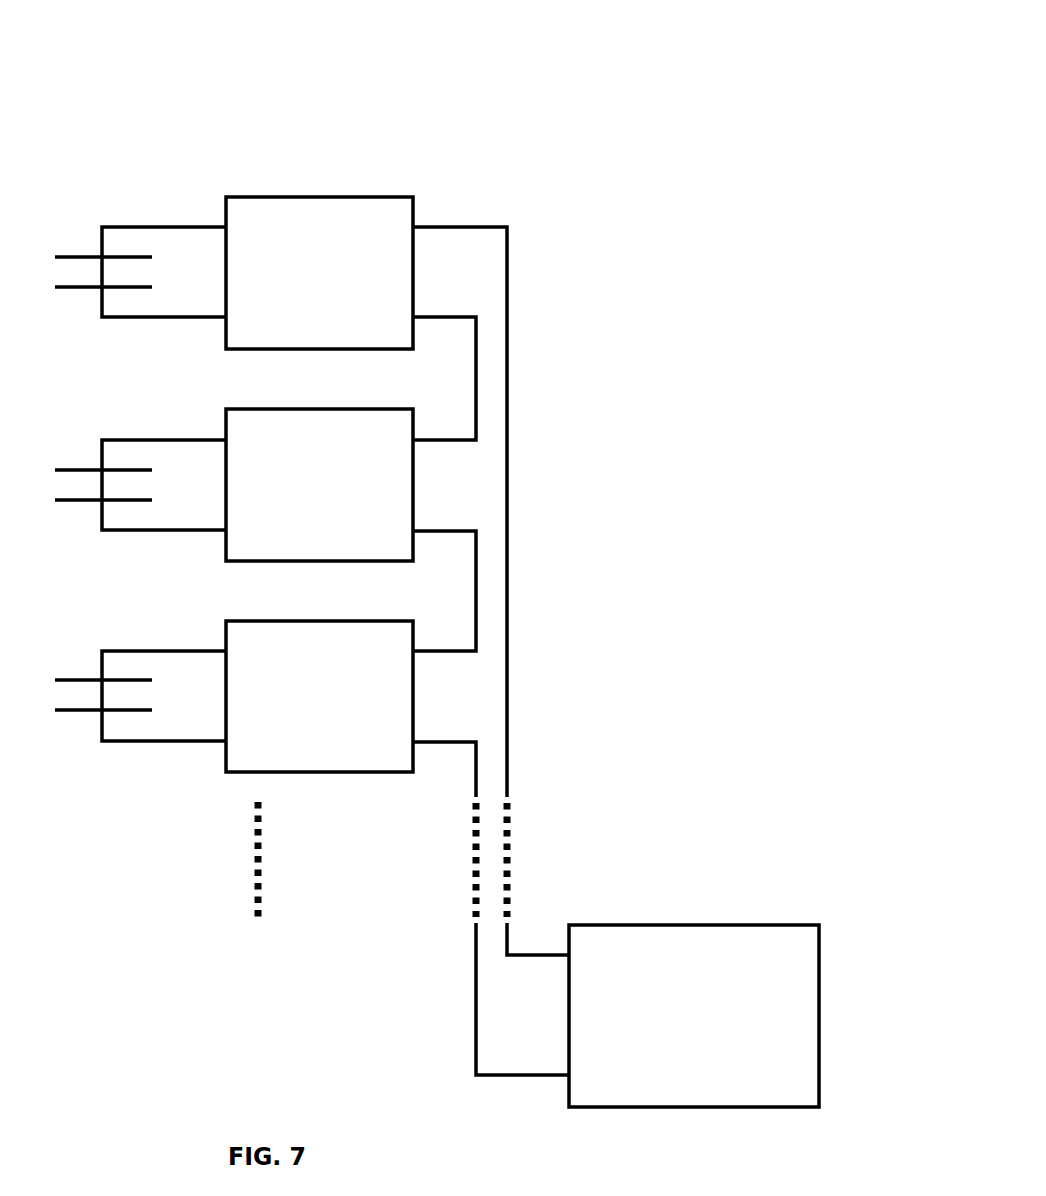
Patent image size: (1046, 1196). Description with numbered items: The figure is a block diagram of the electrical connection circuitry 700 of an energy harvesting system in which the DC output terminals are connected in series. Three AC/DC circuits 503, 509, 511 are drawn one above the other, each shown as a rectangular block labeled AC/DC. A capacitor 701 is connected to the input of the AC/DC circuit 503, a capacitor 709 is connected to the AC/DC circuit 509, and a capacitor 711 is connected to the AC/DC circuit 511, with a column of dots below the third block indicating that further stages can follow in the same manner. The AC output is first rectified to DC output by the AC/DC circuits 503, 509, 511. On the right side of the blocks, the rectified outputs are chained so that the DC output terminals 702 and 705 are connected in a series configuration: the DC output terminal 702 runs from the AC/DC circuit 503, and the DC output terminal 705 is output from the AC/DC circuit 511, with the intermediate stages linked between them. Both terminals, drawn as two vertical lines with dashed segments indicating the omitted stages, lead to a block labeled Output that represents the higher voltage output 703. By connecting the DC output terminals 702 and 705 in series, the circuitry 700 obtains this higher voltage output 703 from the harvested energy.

The electrical connection circuitry 700 is at (670, 87).
The capacitor 701 is at (75, 257).
The capacitor 709 is at (75, 470).
The capacitor 711 is at (75, 680).
The AC/DC circuit 503 is at (300, 197).
The AC/DC circuit 509 is at (383, 409).
The AC/DC circuit 511 is at (383, 621).
The DC output terminal 702 is at (507, 695).
The DC output terminal 705 is at (476, 775).
The higher voltage output 703 is at (792, 925).